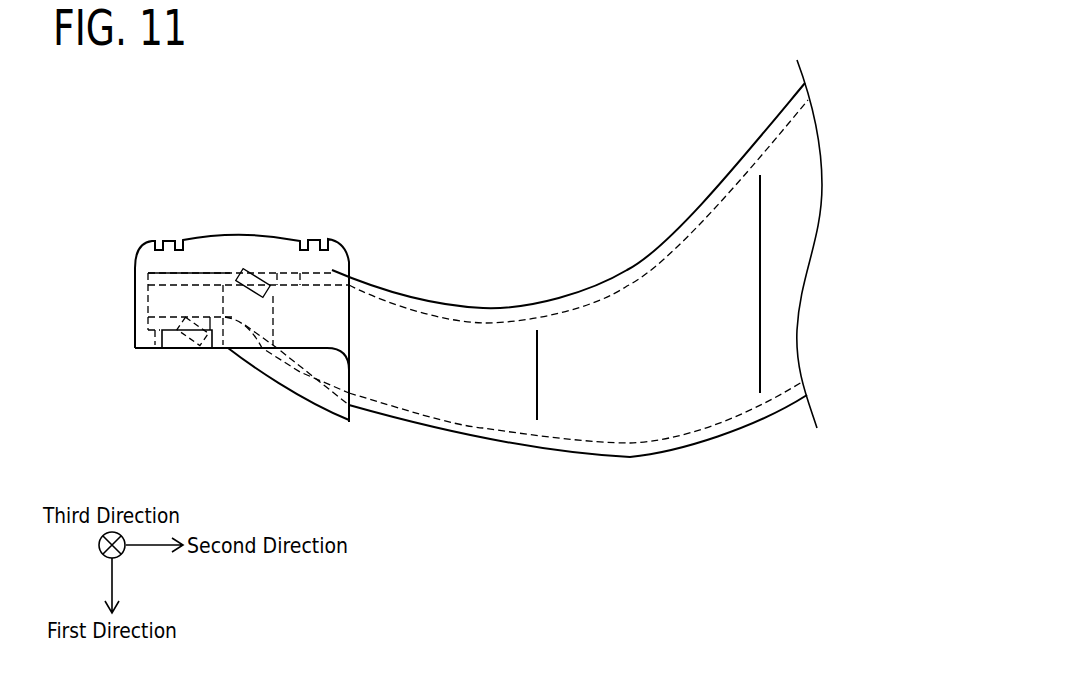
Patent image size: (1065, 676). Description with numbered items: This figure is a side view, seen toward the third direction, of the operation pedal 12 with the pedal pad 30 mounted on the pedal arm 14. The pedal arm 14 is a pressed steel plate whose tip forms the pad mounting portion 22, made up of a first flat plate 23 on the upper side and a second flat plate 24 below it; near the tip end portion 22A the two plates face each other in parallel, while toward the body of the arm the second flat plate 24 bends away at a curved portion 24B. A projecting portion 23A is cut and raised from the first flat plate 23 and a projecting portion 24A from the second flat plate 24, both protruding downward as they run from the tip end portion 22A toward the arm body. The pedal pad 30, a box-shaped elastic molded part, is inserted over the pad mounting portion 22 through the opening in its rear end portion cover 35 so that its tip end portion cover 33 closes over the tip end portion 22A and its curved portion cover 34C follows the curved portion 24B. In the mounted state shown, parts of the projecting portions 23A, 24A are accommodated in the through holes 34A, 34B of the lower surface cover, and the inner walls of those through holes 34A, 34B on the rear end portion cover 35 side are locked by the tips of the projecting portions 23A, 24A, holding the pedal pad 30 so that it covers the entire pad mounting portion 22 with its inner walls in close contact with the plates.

The operation pedal 12 is at (565, 135).
The pedal arm 14 is at (630, 278).
The pad mounting portion 22 is at (265, 262).
The tip end portion 22A is at (141, 293).
The first flat plate 23 is at (202, 270).
The projecting portion 23A is at (232, 268).
The second flat plate 24 is at (145, 349).
The projecting portion 24A is at (203, 349).
The curved portion 24B is at (293, 373).
The pedal pad 30 is at (140, 242).
The tip end portion cover 33 is at (133, 280).
The through hole 34A is at (264, 303).
The through hole 34B is at (178, 349).
The curved portion cover 34C is at (338, 410).
The rear end portion cover 35 is at (350, 260).